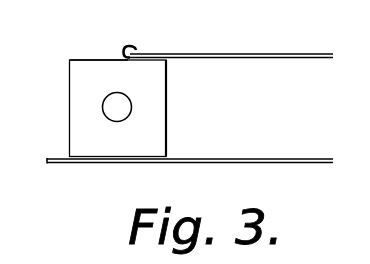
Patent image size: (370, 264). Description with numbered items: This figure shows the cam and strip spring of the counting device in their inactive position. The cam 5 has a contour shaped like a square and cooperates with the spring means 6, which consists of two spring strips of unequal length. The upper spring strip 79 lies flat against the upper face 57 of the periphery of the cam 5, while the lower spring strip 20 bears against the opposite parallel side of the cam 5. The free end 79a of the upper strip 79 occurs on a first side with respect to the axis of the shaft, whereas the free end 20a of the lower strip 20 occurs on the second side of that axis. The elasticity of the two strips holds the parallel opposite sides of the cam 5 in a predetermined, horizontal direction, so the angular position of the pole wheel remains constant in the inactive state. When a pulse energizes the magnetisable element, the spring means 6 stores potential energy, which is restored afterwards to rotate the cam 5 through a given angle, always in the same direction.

The cam 5 is at (105, 146).
The face of the cam periphery 57 is at (92, 59).
The upper spring strip 79 is at (255, 54).
The free end of the upper strip 79a is at (133, 51).
The lower spring strip 20 is at (261, 158).
The free end of the lower strip 20a is at (47, 159).
The spring means 6 is at (302, 63).